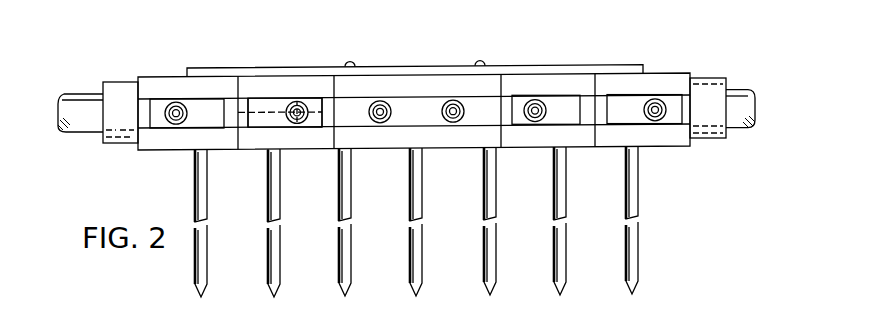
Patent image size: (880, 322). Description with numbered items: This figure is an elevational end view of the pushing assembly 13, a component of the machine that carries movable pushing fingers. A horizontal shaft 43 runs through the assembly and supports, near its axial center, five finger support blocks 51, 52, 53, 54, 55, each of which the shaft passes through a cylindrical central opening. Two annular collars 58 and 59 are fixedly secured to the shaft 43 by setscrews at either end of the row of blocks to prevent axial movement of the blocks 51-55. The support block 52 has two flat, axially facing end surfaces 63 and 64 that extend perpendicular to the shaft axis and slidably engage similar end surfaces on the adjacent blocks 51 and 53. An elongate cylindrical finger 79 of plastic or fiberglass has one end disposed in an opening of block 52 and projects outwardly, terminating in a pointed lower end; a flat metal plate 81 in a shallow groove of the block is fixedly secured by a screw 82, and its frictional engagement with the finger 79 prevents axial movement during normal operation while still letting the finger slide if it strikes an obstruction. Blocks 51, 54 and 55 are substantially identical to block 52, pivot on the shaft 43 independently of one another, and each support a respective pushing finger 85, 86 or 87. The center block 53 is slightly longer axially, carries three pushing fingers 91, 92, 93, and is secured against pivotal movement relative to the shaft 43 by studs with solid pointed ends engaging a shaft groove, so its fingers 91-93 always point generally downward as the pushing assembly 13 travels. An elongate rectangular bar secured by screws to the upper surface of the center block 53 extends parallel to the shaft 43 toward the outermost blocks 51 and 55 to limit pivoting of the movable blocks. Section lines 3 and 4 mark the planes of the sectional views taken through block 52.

The pushing assembly 13 is at (694, 42).
The shaft 43 is at (737, 130).
The finger support block 51 is at (158, 85).
The support block 52 is at (250, 82).
The center block 53 is at (403, 80).
The finger support block 54 is at (573, 80).
The finger support block 55 is at (667, 80).
The annular collar 58 is at (122, 90).
The annular collar 59 is at (707, 90).
The end surface 63 is at (237, 82).
The end surface 64 is at (337, 86).
The finger 79 is at (277, 263).
The plate 81 is at (262, 118).
The screw 82 is at (303, 105).
The pushing finger 85 is at (203, 272).
The pushing finger 86 is at (567, 263).
The pushing finger 87 is at (633, 270).
The pushing finger 91 is at (347, 263).
The pushing finger 92 is at (417, 265).
The pushing finger 93 is at (490, 263).
The section line 3- 3 is at (272, 48).
The section line 4- 4 is at (237, 150).